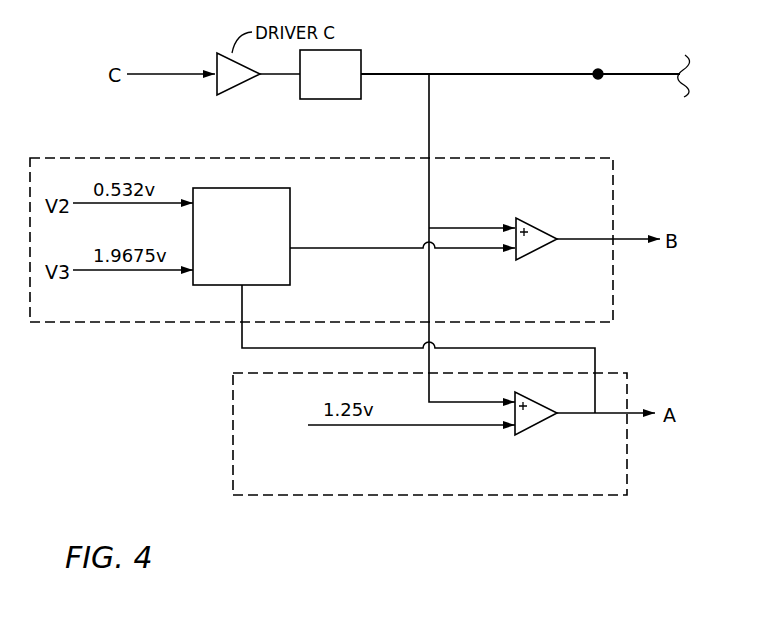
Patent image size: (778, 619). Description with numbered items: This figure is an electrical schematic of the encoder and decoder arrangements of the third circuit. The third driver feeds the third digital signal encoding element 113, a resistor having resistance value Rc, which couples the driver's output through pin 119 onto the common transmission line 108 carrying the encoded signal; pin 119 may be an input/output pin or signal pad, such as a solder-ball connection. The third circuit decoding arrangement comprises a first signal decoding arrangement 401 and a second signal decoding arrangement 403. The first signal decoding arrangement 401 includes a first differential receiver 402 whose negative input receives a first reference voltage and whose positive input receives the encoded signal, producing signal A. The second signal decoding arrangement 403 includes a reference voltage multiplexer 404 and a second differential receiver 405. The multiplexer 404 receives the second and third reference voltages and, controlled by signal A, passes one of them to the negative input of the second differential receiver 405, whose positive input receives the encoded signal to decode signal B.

The third digital signal encoding element 113 is at (361, 57).
The common transmission line 108 is at (655, 73).
The pin 119 is at (598, 69).
The second signal decoding arrangement 403 is at (613, 188).
The reference voltage multiplexer 404 is at (278, 272).
The second differential receiver 405 is at (527, 222).
The first signal decoding arrangement 401 is at (627, 473).
The first differential receiver 402 is at (527, 428).